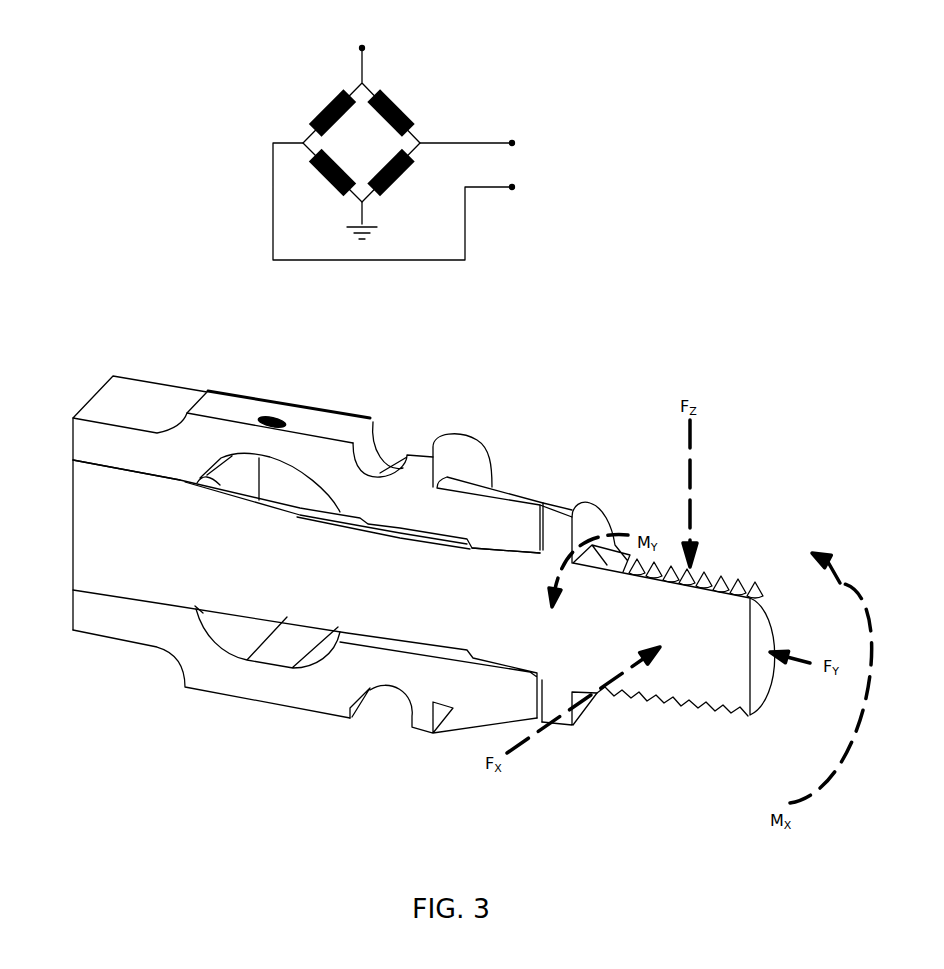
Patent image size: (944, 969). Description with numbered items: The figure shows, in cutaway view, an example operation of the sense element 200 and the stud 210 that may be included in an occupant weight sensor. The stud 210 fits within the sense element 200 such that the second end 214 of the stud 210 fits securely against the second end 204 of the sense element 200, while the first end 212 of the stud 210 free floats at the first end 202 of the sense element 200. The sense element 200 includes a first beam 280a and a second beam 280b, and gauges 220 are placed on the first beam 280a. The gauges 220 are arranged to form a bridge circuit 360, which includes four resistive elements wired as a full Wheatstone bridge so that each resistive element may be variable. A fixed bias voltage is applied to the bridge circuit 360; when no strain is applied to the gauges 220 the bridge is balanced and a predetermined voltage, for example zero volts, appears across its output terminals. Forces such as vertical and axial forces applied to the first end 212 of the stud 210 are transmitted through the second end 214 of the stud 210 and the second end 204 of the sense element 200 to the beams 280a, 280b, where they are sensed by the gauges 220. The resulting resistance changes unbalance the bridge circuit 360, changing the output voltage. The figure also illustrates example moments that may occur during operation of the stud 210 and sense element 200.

The sense element 200 is at (437, 443).
The first end of the sense element 202 is at (517, 500).
The second end of the sense element 204 is at (128, 400).
The stud 210 is at (398, 598).
The first end of the stud 212 is at (720, 667).
The second end of the stud 214 is at (112, 542).
The gauges 220 is at (275, 410).
The first beam 280a is at (303, 445).
The second beam 280b is at (247, 690).
The bridge circuit 360 is at (523, 20).